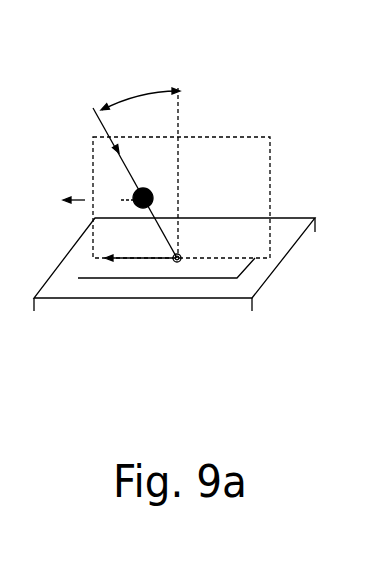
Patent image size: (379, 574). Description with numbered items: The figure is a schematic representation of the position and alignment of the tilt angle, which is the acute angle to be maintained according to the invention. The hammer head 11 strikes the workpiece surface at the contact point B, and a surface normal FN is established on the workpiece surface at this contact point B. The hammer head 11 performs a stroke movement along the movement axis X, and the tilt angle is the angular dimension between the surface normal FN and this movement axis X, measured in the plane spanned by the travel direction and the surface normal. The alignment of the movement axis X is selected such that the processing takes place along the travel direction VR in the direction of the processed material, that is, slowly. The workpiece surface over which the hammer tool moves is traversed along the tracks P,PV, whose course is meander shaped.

The surface normal FN is at (180, 112).
The ball trajectory X is at (125, 166).
The ball velocity vector VR is at (98, 202).
The ball 11 is at (136, 209).
The impact point B is at (180, 255).
The playing surface / virtual plane P,PV is at (183, 278).